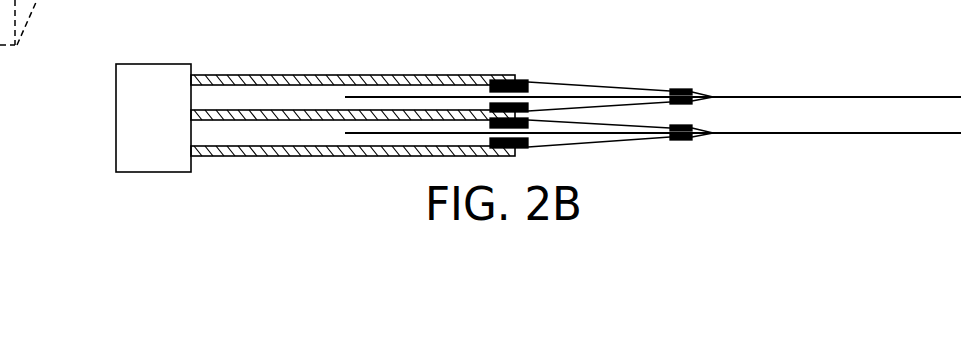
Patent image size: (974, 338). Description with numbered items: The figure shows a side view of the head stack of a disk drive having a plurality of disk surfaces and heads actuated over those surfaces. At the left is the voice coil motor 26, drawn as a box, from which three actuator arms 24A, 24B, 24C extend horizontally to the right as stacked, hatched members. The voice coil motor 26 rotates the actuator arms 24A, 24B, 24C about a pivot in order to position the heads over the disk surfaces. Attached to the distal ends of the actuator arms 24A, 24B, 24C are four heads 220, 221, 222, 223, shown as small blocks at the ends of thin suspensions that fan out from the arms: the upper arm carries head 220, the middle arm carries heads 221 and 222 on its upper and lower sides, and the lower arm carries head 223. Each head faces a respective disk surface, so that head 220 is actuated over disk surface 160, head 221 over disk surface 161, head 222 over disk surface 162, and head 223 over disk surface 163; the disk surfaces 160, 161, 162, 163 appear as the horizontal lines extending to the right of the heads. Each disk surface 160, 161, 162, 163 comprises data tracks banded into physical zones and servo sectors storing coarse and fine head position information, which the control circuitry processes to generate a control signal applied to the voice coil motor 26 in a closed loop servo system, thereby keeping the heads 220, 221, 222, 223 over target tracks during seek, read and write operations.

The voice coil motor 26 is at (116, 117).
The actuator arm 24A is at (247, 75).
The actuator arm 24B is at (290, 110).
The actuator arm 24C is at (328, 146).
The head 220 is at (692, 91).
The head 221 is at (693, 100).
The head 222 is at (693, 131).
The head 223 is at (693, 139).
The disk surface 160 is at (846, 96).
The disk surface 161 is at (886, 98).
The disk surface 162 is at (891, 132).
The disk surface 163 is at (894, 134).